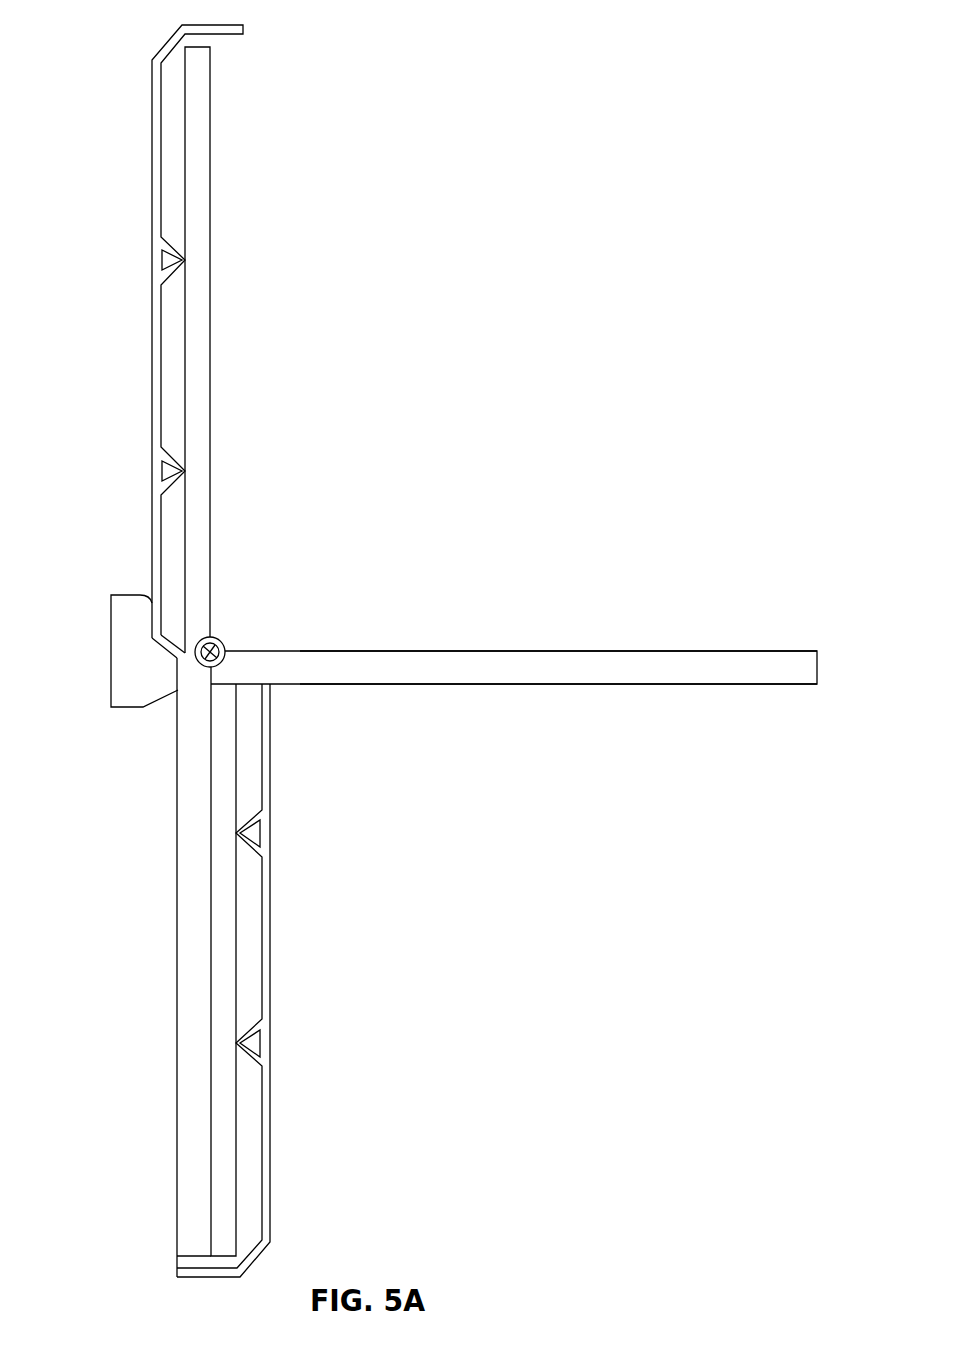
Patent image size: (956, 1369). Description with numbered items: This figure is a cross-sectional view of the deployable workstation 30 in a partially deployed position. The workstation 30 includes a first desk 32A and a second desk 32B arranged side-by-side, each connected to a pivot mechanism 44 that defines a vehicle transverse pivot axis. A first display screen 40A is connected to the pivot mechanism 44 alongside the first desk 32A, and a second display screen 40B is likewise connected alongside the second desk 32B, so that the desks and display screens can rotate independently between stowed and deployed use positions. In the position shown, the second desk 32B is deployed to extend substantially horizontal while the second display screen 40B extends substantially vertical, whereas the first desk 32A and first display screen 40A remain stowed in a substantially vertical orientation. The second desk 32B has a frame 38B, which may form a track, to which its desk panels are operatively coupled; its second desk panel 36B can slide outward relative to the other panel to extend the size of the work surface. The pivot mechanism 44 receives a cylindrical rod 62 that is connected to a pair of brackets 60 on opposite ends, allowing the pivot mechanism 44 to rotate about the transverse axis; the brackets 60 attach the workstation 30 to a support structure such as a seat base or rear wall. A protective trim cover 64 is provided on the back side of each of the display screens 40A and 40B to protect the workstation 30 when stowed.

The deployable workstation 30 is at (477, 300).
The first desk 32A is at (237, 932).
The second desk 32B is at (423, 650).
The second desk panel 36B is at (644, 650).
The frame 38B is at (543, 663).
The first display screen 40A is at (213, 1141).
The second display screen 40B is at (212, 310).
The pivot mechanism 44 is at (224, 634).
The bracket 60 is at (128, 679).
The cylindrical rod 62 is at (200, 643).
The protective trim cover 64 is at (152, 135).